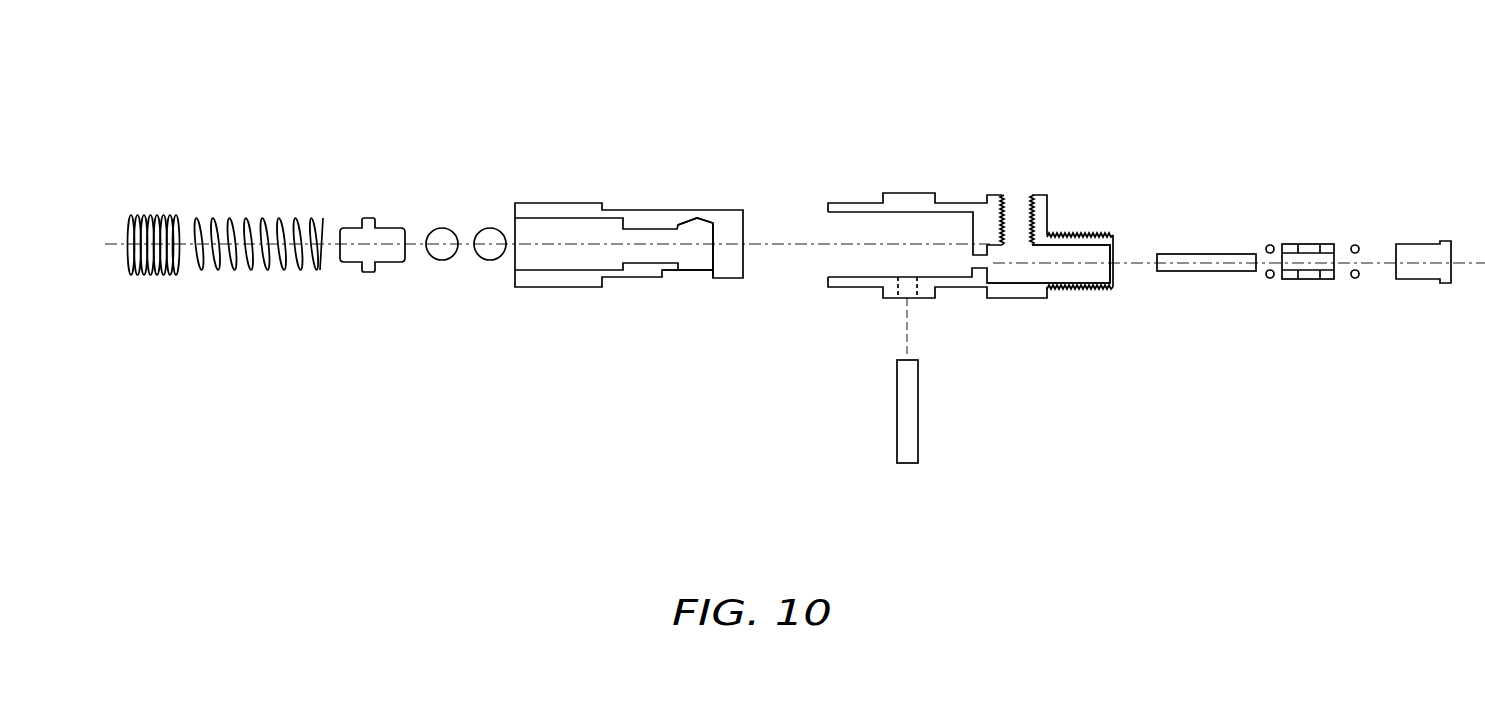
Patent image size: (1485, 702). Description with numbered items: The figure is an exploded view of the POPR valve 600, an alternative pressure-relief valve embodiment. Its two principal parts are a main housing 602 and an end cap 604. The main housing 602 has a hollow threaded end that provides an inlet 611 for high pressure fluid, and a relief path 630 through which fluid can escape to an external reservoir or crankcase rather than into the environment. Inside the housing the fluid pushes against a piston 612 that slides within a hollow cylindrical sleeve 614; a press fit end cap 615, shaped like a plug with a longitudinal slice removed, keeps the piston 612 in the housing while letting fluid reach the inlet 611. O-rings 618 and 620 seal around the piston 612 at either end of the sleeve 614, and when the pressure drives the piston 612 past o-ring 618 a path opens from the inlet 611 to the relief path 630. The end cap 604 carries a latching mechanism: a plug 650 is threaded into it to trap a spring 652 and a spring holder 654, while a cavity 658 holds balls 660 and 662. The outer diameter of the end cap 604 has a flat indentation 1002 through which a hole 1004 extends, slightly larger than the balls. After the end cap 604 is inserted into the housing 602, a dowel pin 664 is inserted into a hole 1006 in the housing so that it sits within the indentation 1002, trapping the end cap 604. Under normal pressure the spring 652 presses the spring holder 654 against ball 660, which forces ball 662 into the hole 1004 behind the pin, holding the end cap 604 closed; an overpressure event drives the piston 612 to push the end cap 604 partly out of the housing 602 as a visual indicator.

The POPR valve 600 is at (296, 70).
The plug 650 is at (147, 214).
The spring 652 is at (263, 214).
The spring holder 654 is at (369, 224).
The ball 660 is at (442, 262).
The ball 662 is at (486, 228).
The end cap 604 is at (563, 203).
The cavity 658 is at (698, 233).
The flat indentation 1002 is at (670, 272).
The hole 1004 is at (699, 256).
The main housing 602 is at (970, 251).
The relief path 630 is at (1013, 212).
The inlet 611 is at (1060, 270).
The hole 1006 is at (898, 298).
The dowel pin 664 is at (920, 416).
The piston 612 is at (1177, 254).
The o-ring 620 is at (1269, 245).
The hollow cylindrical sleeve 614 is at (1290, 244).
The o-ring 618 is at (1357, 245).
The press fit end cap 615 is at (1418, 244).